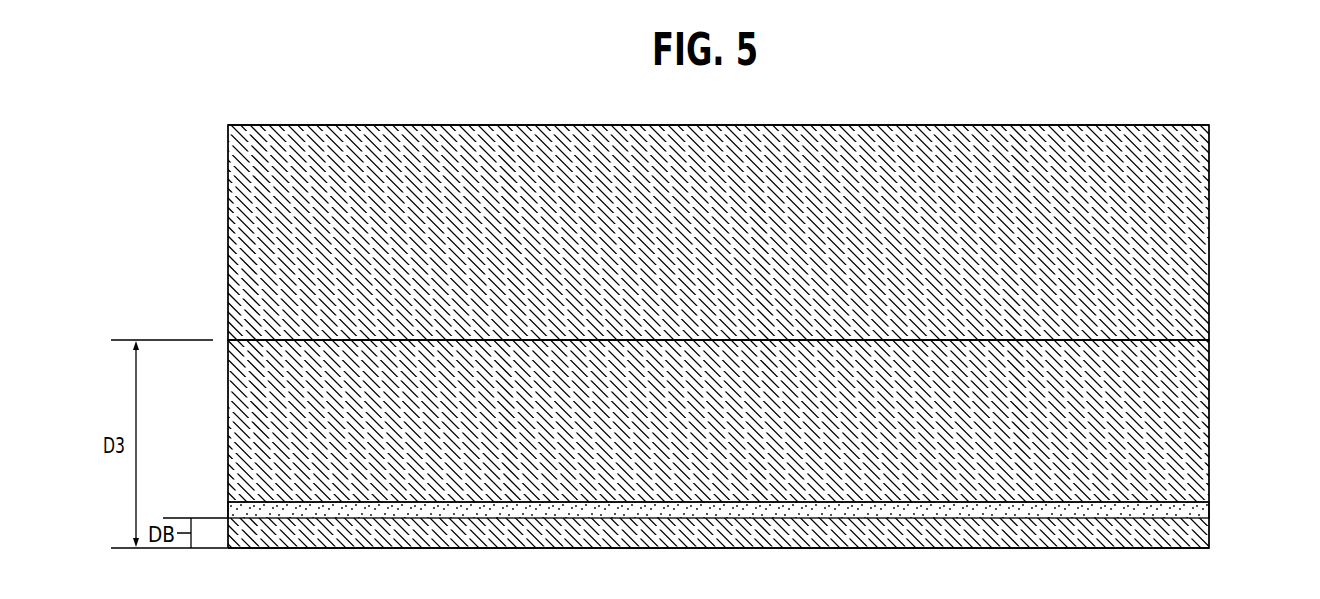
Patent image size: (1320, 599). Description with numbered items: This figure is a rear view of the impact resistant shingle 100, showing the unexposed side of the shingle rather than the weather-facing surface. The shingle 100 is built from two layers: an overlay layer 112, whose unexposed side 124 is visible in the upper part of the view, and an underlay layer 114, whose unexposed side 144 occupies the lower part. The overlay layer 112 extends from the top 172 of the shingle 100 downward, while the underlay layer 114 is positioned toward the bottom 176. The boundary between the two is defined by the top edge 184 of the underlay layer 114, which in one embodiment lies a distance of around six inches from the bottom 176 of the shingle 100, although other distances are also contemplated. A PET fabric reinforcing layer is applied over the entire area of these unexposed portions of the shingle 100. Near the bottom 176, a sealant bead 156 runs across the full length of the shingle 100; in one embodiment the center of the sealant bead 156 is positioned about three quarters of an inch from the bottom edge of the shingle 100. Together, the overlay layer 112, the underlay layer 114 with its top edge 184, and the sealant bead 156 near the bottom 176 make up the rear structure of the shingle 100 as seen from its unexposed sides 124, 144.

The shingle 100 is at (206, 122).
The overlay layer 112 is at (1188, 246).
The underlay layer 114 is at (1187, 402).
The unexposed side 124 is at (1088, 294).
The unexposed side 144 is at (1116, 459).
The sealant bead 156 is at (1128, 510).
The top 172 is at (952, 125).
The bottom 176 is at (985, 550).
The top edge 184 is at (535, 338).